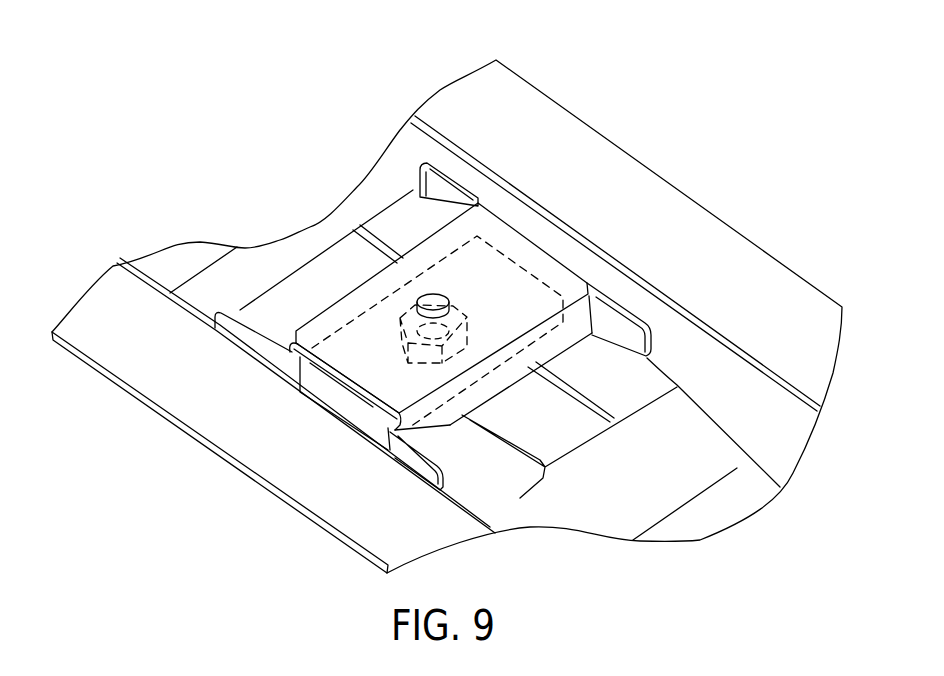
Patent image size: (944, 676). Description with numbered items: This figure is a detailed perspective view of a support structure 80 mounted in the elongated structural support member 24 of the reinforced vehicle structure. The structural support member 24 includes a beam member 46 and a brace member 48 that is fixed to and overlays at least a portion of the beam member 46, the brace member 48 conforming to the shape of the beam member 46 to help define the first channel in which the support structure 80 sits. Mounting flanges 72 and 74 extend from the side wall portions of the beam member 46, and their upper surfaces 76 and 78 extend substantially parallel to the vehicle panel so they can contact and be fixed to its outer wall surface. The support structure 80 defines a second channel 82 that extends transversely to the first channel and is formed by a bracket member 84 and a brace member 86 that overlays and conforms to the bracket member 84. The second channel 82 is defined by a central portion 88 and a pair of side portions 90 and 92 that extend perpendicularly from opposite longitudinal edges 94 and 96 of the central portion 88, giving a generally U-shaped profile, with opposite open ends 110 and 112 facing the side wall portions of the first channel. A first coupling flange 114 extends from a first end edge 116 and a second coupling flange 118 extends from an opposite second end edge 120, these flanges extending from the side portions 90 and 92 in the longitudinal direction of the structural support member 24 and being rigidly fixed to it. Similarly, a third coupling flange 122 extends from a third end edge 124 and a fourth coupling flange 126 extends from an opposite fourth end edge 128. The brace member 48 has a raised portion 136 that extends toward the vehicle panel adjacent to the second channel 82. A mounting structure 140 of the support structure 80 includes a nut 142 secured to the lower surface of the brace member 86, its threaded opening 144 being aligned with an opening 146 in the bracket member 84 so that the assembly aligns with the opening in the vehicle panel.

The structural support member 24 is at (775, 257).
The beam member 46 is at (838, 363).
The brace member 48 is at (718, 422).
The mounting flange 72 is at (110, 300).
The mounting flange 74 is at (482, 95).
The upper surface 76 is at (92, 322).
The upper surface 78 is at (460, 113).
The support structure 80 is at (580, 263).
The second channel 82 is at (338, 393).
The bracket member 84 is at (532, 243).
The brace member 86 is at (300, 390).
The central portion 88 is at (340, 397).
The side portion 90 is at (448, 423).
The side portion 92 is at (288, 323).
The longitudinal edge 94 is at (497, 370).
The longitudinal edge 96 is at (350, 285).
The open end 110 is at (360, 418).
The open end 112 is at (570, 243).
The first coupling flange 114 is at (623, 323).
The first end edge 116 is at (603, 313).
The second coupling flange 118 is at (437, 188).
The second end edge 120 is at (478, 203).
The third coupling flange 122 is at (425, 470).
The third end edge 124 is at (392, 438).
The fourth coupling flange 126 is at (233, 337).
The fourth end edge 128 is at (282, 360).
The raised portion 136 is at (553, 423).
The mounting structure 140 is at (402, 300).
The nut 142 is at (470, 340).
The threaded opening 144 is at (402, 333).
The opening 146 is at (433, 293).